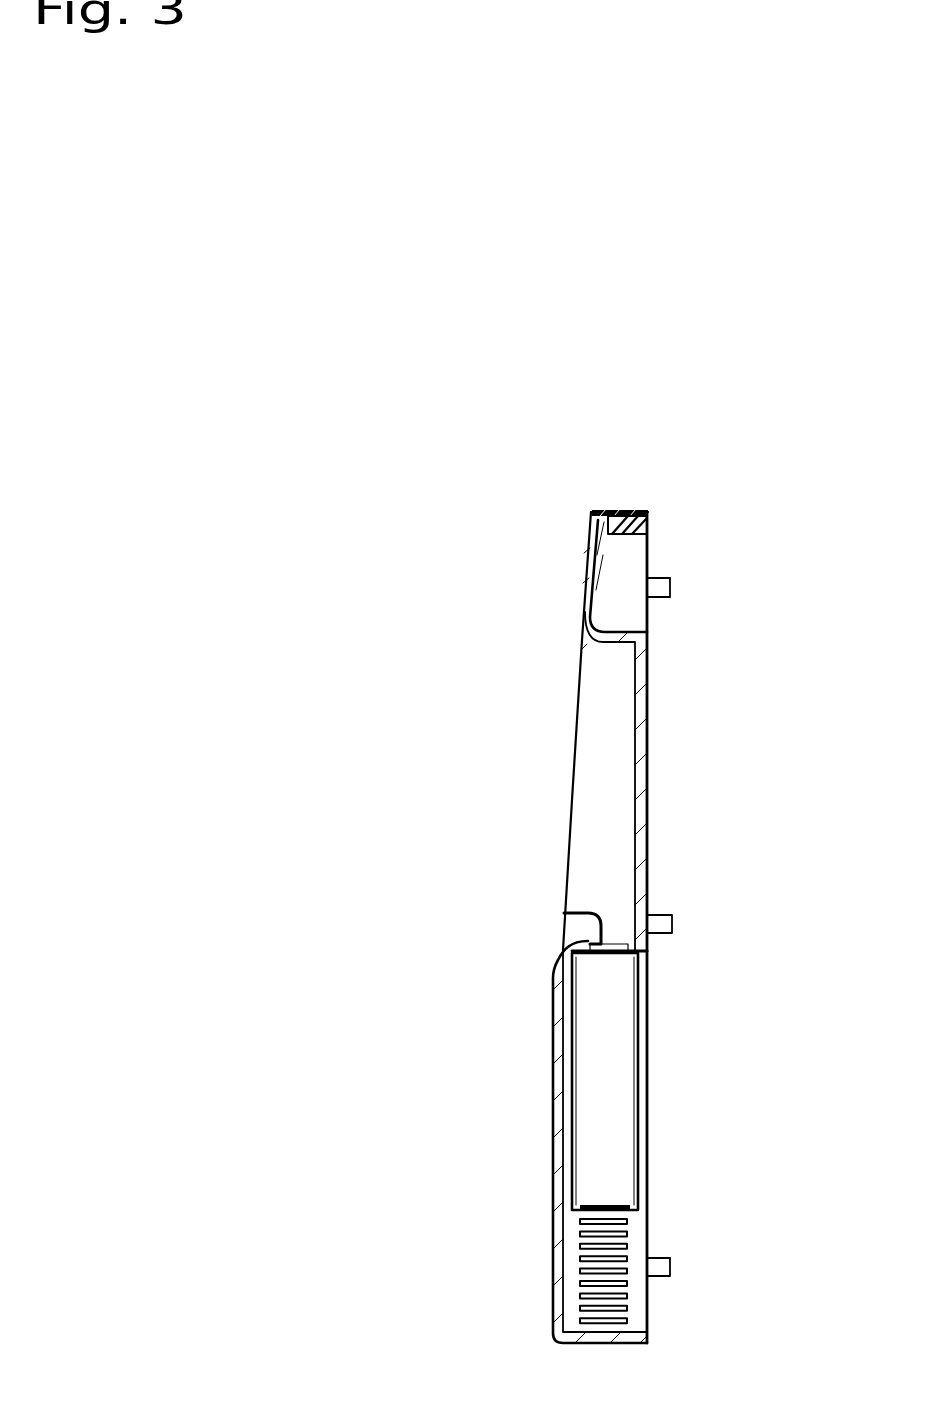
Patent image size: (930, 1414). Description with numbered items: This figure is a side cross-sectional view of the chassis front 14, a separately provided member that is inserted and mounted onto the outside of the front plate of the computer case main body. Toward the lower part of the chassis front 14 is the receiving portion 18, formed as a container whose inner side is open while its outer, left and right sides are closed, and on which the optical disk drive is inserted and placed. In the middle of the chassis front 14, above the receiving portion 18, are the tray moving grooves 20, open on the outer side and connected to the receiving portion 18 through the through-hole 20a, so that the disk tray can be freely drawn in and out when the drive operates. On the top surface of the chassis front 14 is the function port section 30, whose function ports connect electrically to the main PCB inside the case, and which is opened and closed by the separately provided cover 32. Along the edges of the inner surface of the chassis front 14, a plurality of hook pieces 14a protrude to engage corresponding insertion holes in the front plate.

The chassis front 14 is at (541, 1263).
The hook pieces 14a is at (672, 924).
The receiving portion 18 is at (603, 1090).
The tray moving grooves 20 is at (595, 767).
The through-hole 20a is at (565, 917).
The function port section 30 is at (640, 522).
The cover 32 is at (625, 512).